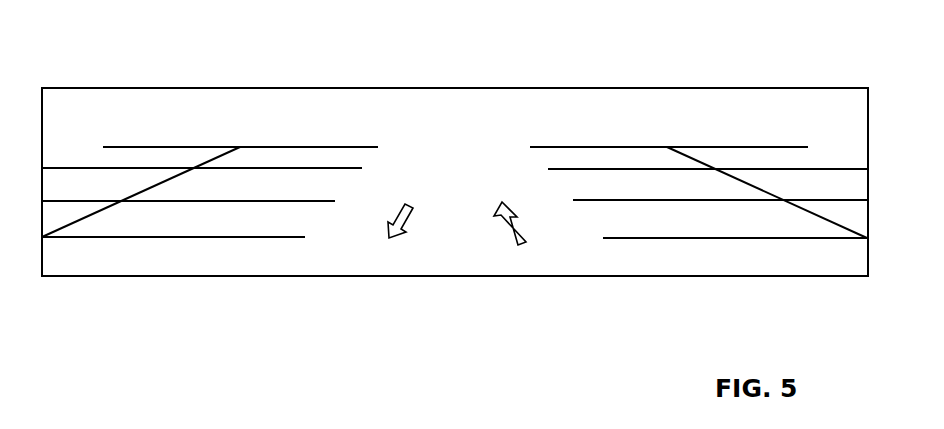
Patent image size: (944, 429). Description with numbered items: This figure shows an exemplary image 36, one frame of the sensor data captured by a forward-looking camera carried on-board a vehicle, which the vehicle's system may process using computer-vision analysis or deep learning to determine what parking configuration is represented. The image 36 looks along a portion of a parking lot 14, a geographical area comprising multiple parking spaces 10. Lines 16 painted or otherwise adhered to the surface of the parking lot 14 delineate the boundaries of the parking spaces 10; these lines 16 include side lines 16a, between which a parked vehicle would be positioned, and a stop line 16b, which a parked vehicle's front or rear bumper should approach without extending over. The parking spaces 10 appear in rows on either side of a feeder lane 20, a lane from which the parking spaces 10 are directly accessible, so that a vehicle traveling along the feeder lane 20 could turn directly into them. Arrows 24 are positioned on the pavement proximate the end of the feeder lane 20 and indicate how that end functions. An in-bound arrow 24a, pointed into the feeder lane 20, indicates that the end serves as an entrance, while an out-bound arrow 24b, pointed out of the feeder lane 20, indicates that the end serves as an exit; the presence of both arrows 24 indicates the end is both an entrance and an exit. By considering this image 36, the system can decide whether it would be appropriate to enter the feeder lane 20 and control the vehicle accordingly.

The parking space 10 is at (538, 160).
The parking lot 14 is at (111, 97).
The lines 16 is at (455, 182).
The side lines 16a is at (287, 168).
The stop line 16b is at (217, 157).
The feeder lane 20 is at (455, 260).
The arrows 24 is at (449, 263).
The in-bound arrow 24a is at (517, 245).
The out-bound arrow 24b is at (397, 240).
The image 36 is at (149, 66).